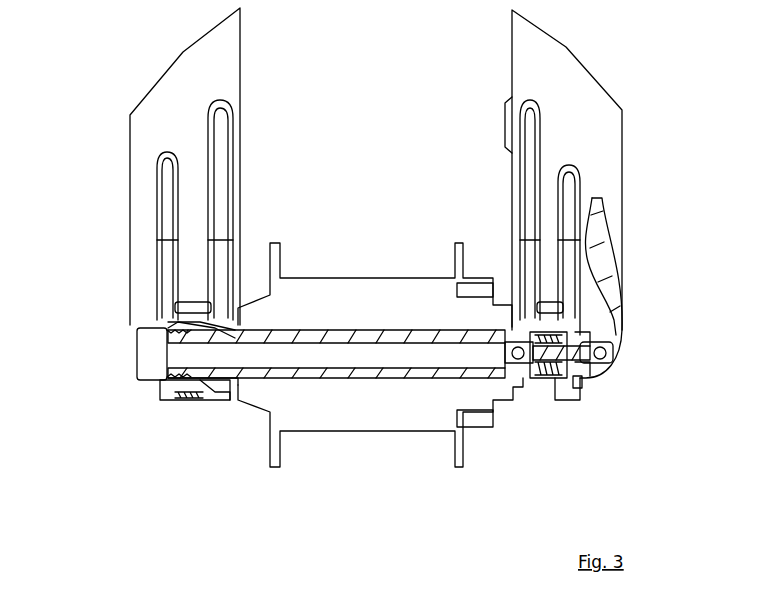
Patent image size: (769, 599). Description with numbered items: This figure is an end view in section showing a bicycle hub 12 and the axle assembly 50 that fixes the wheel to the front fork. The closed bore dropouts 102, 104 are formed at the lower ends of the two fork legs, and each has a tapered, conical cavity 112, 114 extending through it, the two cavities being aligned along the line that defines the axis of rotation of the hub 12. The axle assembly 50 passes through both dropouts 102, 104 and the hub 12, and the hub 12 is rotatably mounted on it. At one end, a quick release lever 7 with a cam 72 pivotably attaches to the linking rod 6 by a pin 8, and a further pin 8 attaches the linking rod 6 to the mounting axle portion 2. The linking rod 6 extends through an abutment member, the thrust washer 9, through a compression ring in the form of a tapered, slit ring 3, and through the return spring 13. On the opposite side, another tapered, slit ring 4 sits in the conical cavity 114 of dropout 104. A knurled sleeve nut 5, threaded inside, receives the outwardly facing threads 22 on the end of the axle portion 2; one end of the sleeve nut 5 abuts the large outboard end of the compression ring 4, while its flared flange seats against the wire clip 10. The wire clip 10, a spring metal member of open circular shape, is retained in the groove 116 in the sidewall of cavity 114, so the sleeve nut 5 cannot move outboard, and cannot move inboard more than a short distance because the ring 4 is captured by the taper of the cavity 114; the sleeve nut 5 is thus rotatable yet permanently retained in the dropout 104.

The mounting axle portion 2 is at (381, 328).
The tapered, slit ring 3 is at (569, 385).
The tapered, slit ring 4 is at (203, 384).
The sleeve nut 5 is at (141, 378).
The linking rod 6 is at (587, 358).
The quick release lever 7 is at (612, 268).
The pin 8 is at (600, 350).
The thrust washer 9 is at (579, 380).
The wire clip 10 is at (163, 315).
The hub 12 is at (355, 434).
The return spring 13 is at (553, 376).
The threads 22 is at (165, 322).
The axle assembly 50 is at (655, 357).
The cam 72 is at (582, 342).
The closed bore dropout 102 is at (572, 272).
The closed bore dropout 104 is at (163, 270).
The conical cavity 112 is at (542, 384).
The conical cavity 114 is at (194, 392).
The groove 116 is at (164, 394).